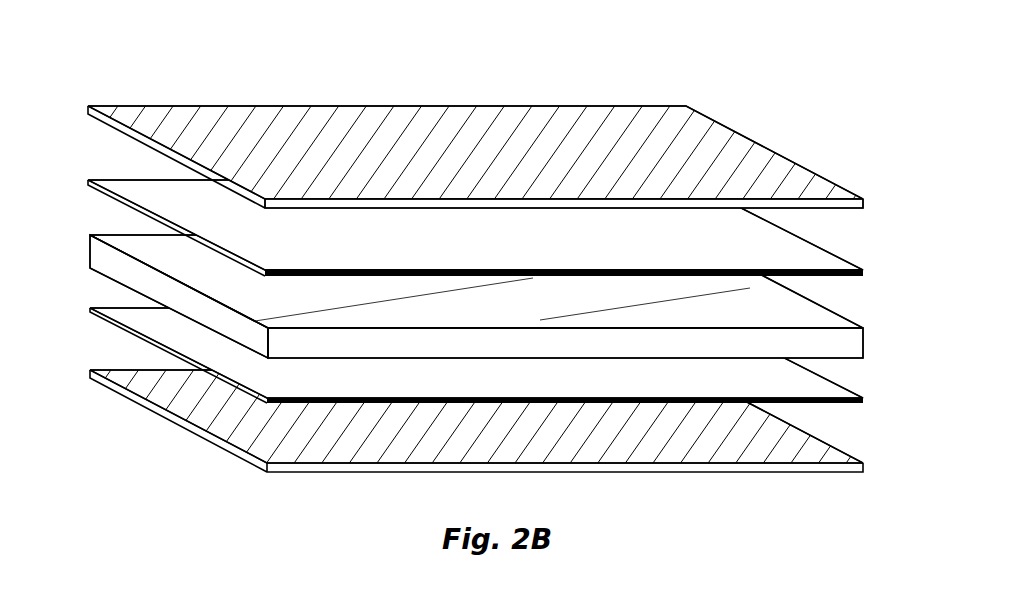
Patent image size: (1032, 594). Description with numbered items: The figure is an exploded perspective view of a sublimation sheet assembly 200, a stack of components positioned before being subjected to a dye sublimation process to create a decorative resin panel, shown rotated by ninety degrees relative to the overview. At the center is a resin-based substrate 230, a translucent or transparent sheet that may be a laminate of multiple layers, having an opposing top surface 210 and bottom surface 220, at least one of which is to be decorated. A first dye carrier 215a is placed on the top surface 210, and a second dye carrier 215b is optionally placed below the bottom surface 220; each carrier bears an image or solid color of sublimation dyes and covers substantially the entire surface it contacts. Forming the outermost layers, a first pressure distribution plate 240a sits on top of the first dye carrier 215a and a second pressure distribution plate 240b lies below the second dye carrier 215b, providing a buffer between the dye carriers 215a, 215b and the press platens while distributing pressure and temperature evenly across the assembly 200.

The sublimation sheet assembly 200 is at (742, 76).
The top surface 210 is at (133, 251).
The bottom surface 220 is at (133, 290).
The resin-based substrate 230 is at (810, 313).
The first dye carrier 215a is at (813, 243).
The second dye carrier 215b is at (808, 382).
The first pressure distribution plate 240a is at (800, 172).
The second pressure distribution plate 240b is at (813, 450).